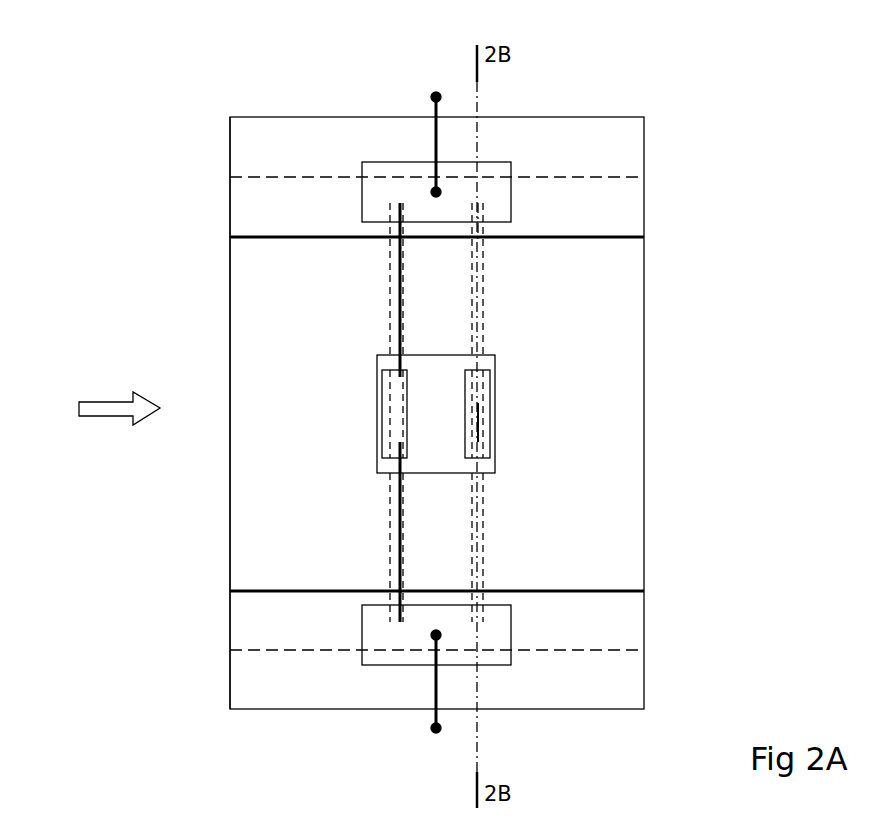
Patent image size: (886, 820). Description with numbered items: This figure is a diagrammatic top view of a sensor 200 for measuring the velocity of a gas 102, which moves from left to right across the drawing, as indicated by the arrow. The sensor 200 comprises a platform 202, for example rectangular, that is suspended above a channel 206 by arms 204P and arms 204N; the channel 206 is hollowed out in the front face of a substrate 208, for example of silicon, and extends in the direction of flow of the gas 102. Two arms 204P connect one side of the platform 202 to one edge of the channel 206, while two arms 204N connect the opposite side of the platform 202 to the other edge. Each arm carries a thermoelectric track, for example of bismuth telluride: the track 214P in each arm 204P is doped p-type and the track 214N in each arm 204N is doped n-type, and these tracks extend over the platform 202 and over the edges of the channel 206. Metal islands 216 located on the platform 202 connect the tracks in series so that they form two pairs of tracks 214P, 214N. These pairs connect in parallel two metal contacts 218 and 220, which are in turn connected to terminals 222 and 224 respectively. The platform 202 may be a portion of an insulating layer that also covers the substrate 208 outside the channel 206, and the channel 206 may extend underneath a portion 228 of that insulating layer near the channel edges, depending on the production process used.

The sensor 200 is at (232, 76).
The gas 102 is at (108, 415).
The platform 202 is at (496, 447).
The arms 204P is at (383, 281).
The arms 204N is at (383, 556).
The channel 206 is at (625, 477).
The substrate 208 is at (230, 550).
The thermoelectric track 214P is at (389, 323).
The thermoelectric track 214N is at (388, 520).
The metal islands 216 is at (394, 418).
The metal contact 218 is at (370, 200).
The metal contact 220 is at (373, 635).
The terminal 222 is at (434, 94).
The terminal 224 is at (430, 730).
The portion of the insulating layer 228 is at (605, 212).